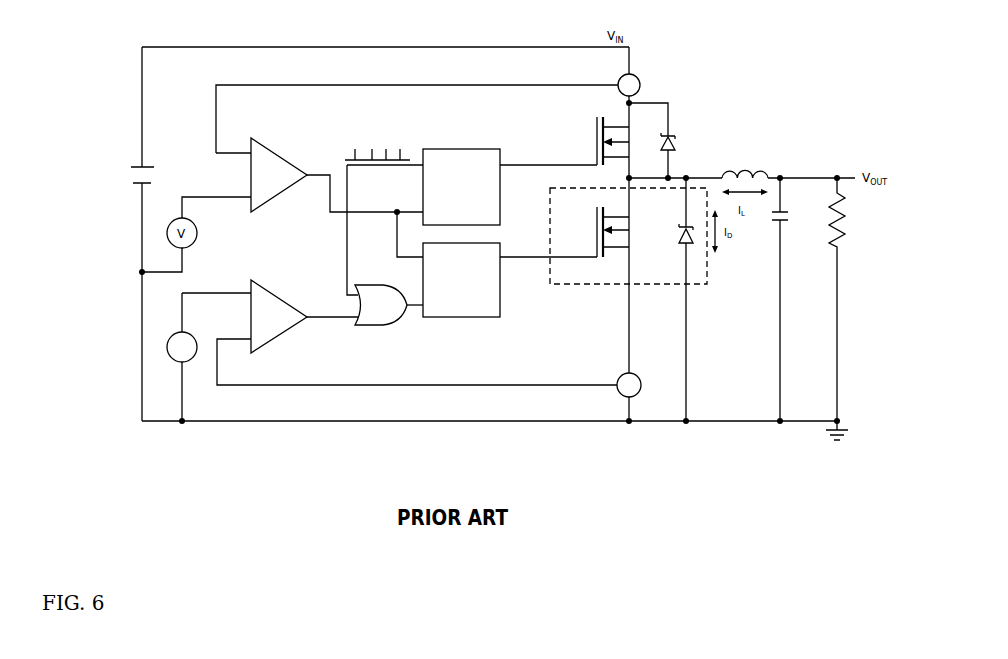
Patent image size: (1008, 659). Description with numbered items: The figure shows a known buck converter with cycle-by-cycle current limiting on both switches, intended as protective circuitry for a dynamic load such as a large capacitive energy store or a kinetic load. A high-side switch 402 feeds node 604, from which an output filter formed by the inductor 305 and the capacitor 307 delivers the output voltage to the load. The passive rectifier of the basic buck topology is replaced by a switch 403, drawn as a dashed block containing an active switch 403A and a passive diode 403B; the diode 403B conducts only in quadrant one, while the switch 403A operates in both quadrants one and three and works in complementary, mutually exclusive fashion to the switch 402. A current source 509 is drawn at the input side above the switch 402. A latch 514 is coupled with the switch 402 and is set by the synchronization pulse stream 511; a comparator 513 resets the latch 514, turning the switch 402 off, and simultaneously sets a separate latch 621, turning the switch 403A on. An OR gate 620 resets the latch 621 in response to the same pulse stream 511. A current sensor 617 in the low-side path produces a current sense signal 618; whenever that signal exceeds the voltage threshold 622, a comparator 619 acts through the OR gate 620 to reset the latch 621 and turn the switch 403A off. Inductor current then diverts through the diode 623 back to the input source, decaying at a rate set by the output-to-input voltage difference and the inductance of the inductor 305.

The inductor 305 is at (788, 168).
The capacitor 307 is at (788, 216).
The MOSFET switch 402 is at (564, 141).
The switch 403 is at (563, 292).
The active switch 403A is at (564, 232).
The passive diode 403B is at (669, 299).
The current source 509 is at (645, 74).
The synchronization pulse stream 511 is at (384, 213).
The comparator 513 is at (337, 175).
The latch 514 is at (461, 187).
The node 604 is at (688, 174).
The current sensor 617 is at (620, 374).
The current sense signal 618 is at (530, 384).
The comparator 619 is at (304, 316).
The OR gate 620 is at (389, 305).
The latch 621 is at (461, 280).
The voltage threshold 622 is at (201, 357).
The diode 623 is at (679, 132).